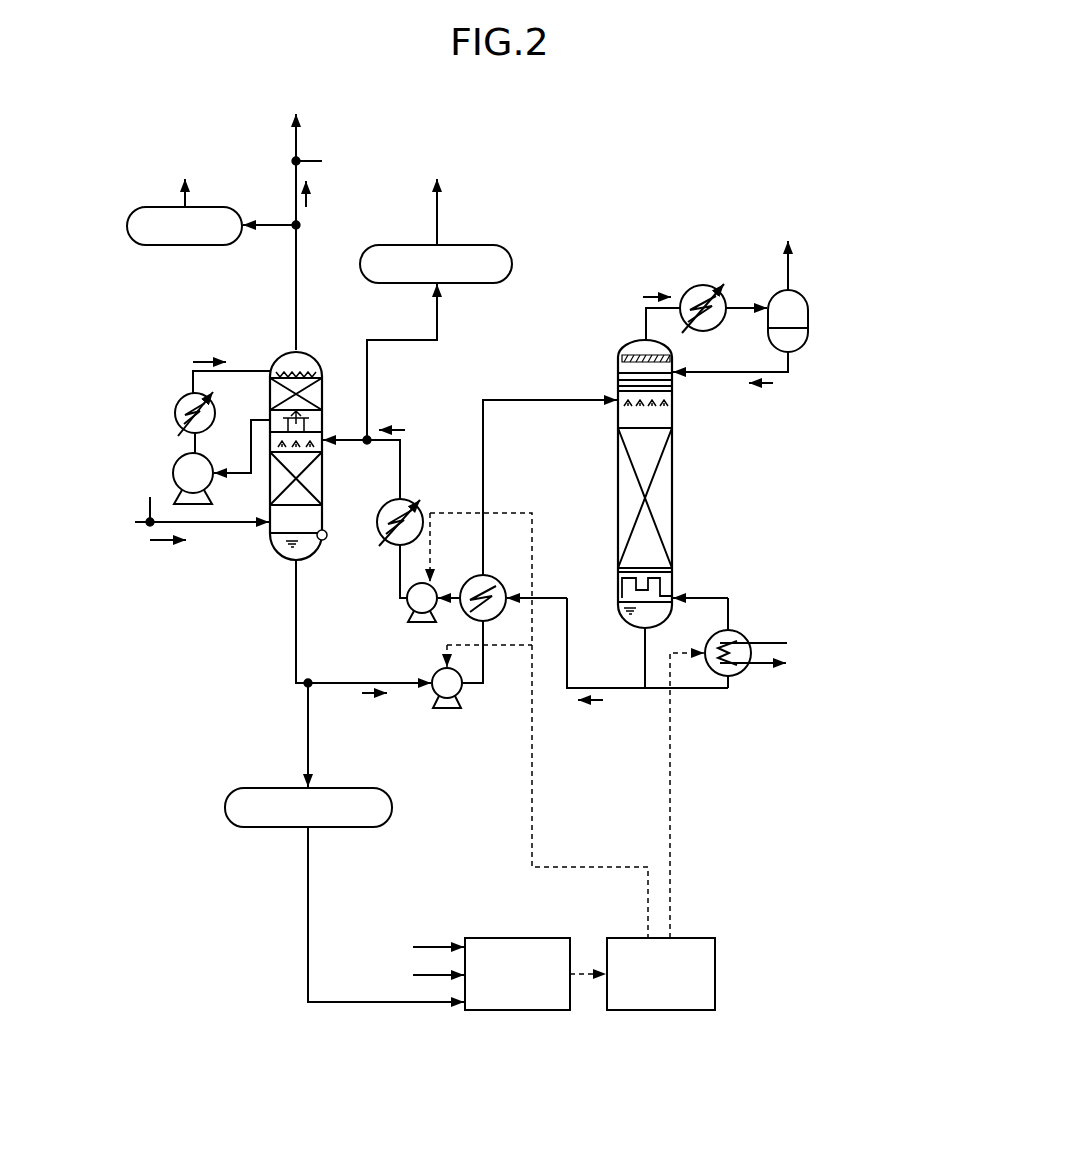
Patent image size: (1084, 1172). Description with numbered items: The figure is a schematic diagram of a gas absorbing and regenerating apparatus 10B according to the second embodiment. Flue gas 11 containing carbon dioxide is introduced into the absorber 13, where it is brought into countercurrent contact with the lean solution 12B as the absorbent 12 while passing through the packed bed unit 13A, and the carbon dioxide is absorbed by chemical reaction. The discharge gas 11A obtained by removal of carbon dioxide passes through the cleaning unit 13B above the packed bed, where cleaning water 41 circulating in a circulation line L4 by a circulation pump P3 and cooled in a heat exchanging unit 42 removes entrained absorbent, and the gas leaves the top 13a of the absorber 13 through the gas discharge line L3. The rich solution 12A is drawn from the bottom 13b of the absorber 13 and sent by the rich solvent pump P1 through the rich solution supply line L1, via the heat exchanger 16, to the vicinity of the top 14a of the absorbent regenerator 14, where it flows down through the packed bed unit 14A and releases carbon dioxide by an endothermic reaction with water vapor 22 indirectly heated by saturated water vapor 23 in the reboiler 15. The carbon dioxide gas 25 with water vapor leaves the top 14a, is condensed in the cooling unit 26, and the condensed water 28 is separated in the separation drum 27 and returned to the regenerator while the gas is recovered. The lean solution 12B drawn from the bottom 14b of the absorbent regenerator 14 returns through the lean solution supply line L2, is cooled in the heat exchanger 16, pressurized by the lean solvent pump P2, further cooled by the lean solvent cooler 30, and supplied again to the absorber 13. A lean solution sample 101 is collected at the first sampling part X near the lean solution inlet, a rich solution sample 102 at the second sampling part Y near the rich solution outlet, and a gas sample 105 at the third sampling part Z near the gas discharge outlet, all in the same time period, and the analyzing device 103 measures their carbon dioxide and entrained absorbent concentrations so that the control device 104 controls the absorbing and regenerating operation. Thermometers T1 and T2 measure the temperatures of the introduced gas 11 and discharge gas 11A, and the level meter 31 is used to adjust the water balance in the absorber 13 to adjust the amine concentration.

The gas absorbing and regenerating apparatus 10B is at (541, 309).
The flue gas 11 is at (158, 542).
The discharge gas 11A is at (307, 197).
The absorbent 12 is at (406, 429).
The rich solution 12A is at (362, 694).
The lean solution 12B is at (590, 702).
The absorber 13 is at (271, 339).
The top of the absorber 13a is at (311, 354).
The bottom of the absorber 13b is at (279, 559).
The packed bed unit 13A is at (321, 470).
The cleaning unit 13B is at (323, 399).
The absorbent regenerator 14 is at (698, 482).
The top of the absorbent regenerator 14a is at (628, 349).
The bottom of the absorbent regenerator 14b is at (625, 626).
The packed bed unit 14A is at (619, 500).
The reboiler 15 is at (736, 676).
The heat exchanger 16 is at (491, 577).
The water vapor 22 is at (700, 597).
The saturated water vapor 23 is at (787, 643).
The CO2 gas with water vapor 25 is at (644, 297).
The cooling unit 26 is at (703, 285).
The separation drum 27 is at (809, 318).
The condensed water 28 is at (760, 384).
The lean solvent cooler 30 is at (405, 500).
The level meter 31 is at (324, 541).
The cleaning water 41 is at (192, 362).
The heat exchanging unit 42 is at (176, 410).
The lean solution sample 101 is at (487, 245).
The rich solution sample 102 is at (262, 788).
The analyzing device 103 is at (487, 938).
The control device 104 is at (703, 938).
The gas sample 105 is at (137, 207).
The rich solution supply line L1 is at (426, 682).
The lean solution supply line L2 is at (568, 612).
The gas discharge line L3 is at (296, 132).
The circulation line L4 is at (192, 377).
The rich solvent pump P1 is at (461, 690).
The lean solvent pump P2 is at (431, 583).
The circulation pump P3 is at (176, 462).
The thermometer T1 is at (150, 501).
The thermometer T2 is at (317, 164).
The first sampling part X is at (369, 437).
The second sampling part Y is at (306, 686).
The third sampling part Z is at (293, 229).